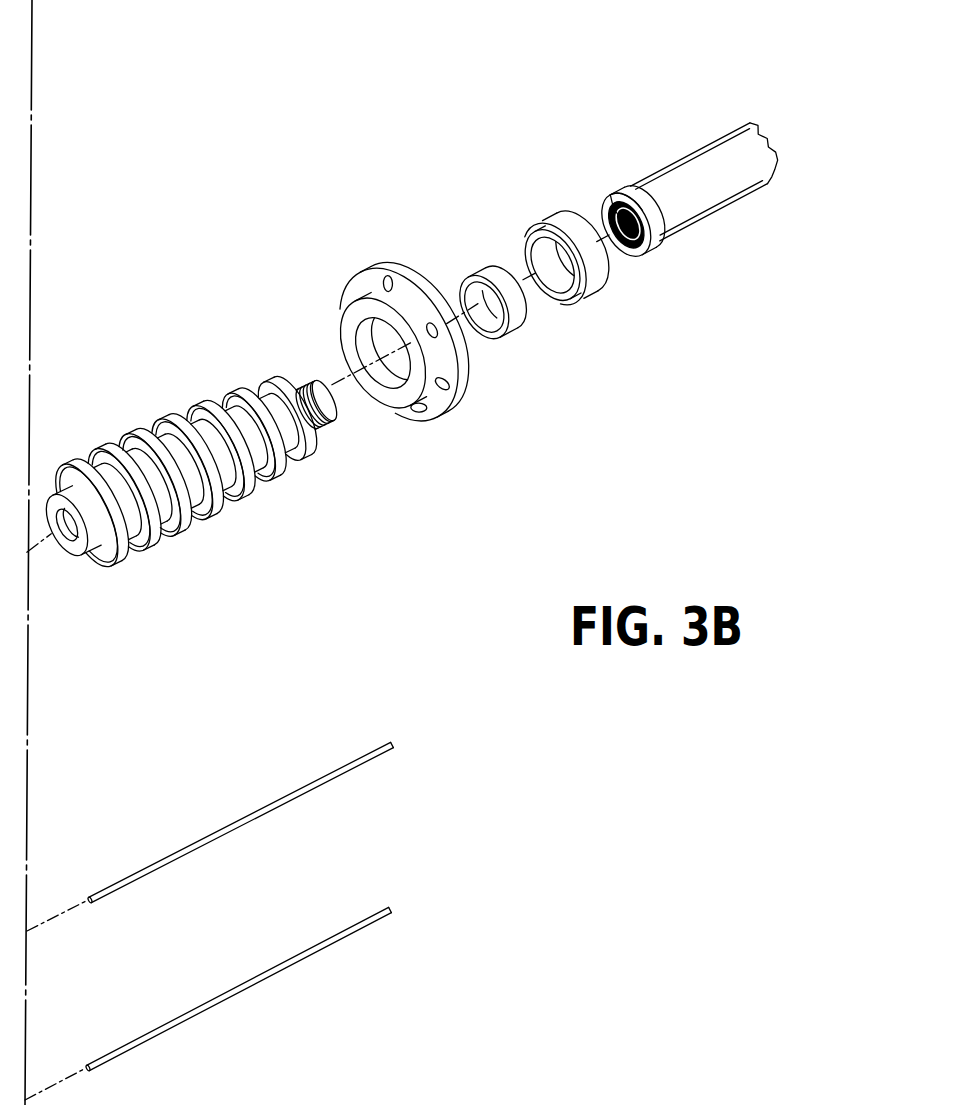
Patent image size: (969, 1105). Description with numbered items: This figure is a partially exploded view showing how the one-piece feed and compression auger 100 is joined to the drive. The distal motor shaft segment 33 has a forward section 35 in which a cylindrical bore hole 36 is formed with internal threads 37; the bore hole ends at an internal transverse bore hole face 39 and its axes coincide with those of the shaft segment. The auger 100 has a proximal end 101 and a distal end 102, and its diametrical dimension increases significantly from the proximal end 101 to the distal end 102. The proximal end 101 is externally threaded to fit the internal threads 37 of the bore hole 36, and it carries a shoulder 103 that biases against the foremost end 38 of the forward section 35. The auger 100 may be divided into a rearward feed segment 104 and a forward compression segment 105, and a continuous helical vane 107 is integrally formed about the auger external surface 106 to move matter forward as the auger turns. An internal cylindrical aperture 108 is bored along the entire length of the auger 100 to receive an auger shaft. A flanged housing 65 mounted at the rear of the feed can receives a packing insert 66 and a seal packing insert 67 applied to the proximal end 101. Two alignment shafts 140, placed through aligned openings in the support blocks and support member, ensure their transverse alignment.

The distal motor shaft segment 33 is at (745, 152).
The forward section of the distal motor shaft segment 35 is at (620, 195).
The cylindrical bore hole 36 is at (643, 253).
The internal threads 37 is at (637, 257).
The foremost end of the distal shaft segment forward section 38 is at (620, 205).
The internal transverse bore hole face 39 is at (615, 206).
The flanged housing 65 is at (363, 270).
The packing insert 66 is at (578, 300).
The seal packing insert 67 is at (510, 332).
The feed and compression auger 100 is at (217, 481).
The proximal end of the auger 101 is at (332, 418).
The distal end of the auger 102 is at (70, 533).
The shoulder 103 is at (278, 382).
The rearward feed segment 104 is at (217, 376).
The forward compression segment 105 is at (137, 418).
The auger external surface 106 is at (252, 487).
The continuous helical vane 107 is at (207, 512).
The internal cylindrical aperture 108 is at (62, 547).
The alignment shaft 140 is at (335, 777).